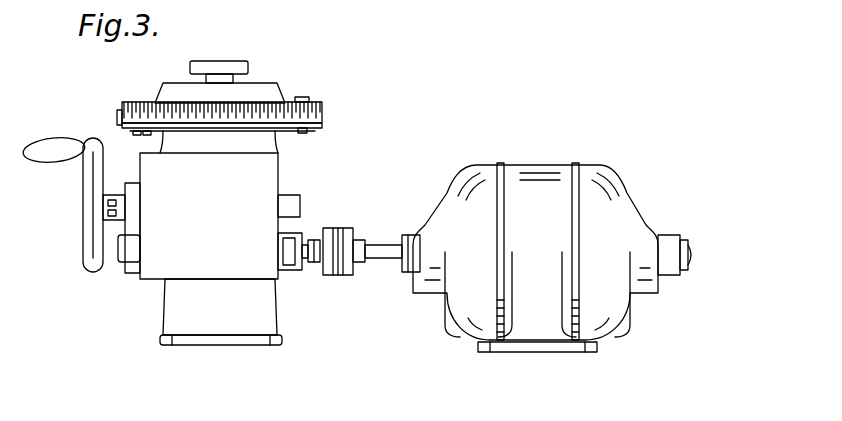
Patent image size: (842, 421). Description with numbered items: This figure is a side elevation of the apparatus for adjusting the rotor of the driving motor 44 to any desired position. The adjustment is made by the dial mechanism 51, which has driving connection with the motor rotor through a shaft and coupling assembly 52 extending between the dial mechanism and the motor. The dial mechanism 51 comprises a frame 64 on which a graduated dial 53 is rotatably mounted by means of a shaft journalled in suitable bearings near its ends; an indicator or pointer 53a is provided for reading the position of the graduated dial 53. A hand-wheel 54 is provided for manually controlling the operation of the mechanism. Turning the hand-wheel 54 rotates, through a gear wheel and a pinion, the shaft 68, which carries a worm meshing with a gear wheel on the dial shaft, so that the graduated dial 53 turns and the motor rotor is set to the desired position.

The dial mechanism 51 is at (312, 69).
The graduated dial 53 is at (270, 109).
The indicator or pointer 53a is at (117, 118).
The hand-wheel 54 is at (83, 196).
The frame 64 is at (282, 173).
The shaft 68 is at (309, 240).
The shaft and coupling assembly 52 is at (348, 229).
The driving motor 44 is at (664, 190).